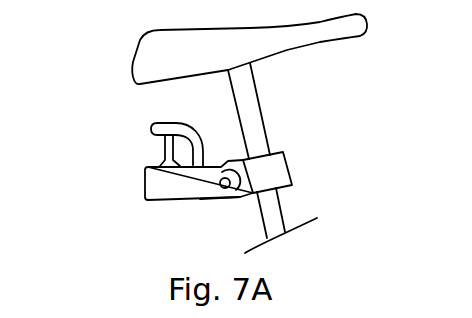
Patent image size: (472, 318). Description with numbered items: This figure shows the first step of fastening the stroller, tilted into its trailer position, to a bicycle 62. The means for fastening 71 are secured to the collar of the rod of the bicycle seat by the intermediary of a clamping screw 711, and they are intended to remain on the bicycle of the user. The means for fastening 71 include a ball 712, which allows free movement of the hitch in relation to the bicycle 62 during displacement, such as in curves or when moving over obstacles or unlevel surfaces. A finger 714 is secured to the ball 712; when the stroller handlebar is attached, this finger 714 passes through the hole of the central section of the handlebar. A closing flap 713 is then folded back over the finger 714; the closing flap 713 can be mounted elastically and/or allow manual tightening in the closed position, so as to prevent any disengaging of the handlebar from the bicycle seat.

The bicycle 62 is at (310, 73).
The means for fastening 71 is at (119, 202).
The clamping screw 711 is at (220, 186).
The ball 712 is at (160, 166).
The closing flap 713 is at (152, 125).
The finger 714 is at (165, 144).